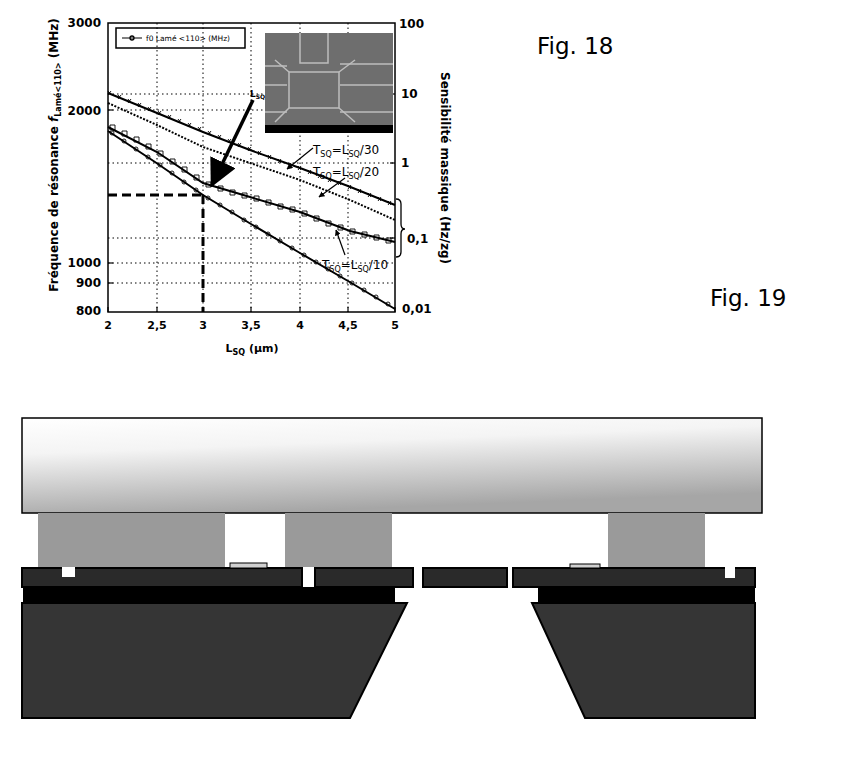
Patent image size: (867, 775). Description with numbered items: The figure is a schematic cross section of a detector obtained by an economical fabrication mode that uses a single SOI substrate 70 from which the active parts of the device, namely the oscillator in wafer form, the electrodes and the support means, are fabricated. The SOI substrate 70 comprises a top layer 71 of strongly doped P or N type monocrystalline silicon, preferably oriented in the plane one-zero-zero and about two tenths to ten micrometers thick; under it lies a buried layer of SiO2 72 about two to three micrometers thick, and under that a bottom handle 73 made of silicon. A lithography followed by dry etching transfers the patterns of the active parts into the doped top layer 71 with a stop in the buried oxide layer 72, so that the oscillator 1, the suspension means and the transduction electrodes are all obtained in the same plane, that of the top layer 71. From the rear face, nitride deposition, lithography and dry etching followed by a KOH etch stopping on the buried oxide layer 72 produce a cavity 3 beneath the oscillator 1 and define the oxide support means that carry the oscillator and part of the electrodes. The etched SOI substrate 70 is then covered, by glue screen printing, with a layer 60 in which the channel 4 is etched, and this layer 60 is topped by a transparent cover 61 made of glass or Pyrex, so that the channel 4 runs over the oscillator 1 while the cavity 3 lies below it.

The oscillator 1 is at (451, 585).
The cavity 3 is at (463, 631).
The channel 4 is at (490, 542).
The layer 60 is at (350, 540).
The transparent cover 61 is at (623, 467).
The SOI substrate 70 is at (422, 575).
The top layer 71 is at (729, 578).
The buried layer of SiO2 72 is at (748, 578).
The bottom handle 73 is at (417, 668).